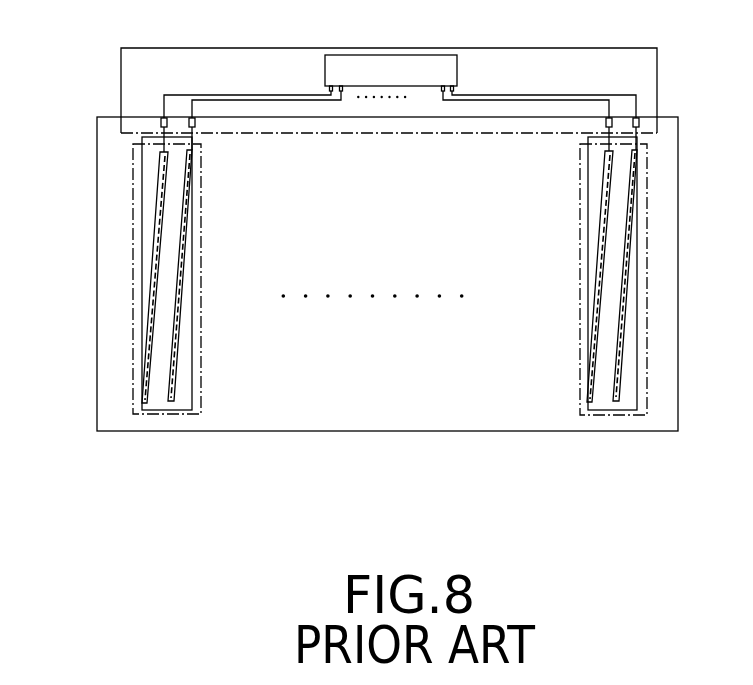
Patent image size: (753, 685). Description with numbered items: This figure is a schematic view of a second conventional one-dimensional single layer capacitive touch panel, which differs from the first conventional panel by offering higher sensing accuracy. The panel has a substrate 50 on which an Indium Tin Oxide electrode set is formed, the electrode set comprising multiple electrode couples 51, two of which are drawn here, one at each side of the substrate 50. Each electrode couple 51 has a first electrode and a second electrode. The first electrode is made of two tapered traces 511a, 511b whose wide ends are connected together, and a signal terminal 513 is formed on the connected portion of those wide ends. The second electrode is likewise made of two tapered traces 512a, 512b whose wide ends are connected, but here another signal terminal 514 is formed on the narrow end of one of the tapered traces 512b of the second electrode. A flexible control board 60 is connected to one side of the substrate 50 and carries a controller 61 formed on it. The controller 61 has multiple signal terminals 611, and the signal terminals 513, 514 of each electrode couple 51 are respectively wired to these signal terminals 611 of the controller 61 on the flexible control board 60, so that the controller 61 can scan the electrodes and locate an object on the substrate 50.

The substrate 50 is at (670, 155).
The electrode couple 51 is at (133, 158).
The tapered trace 511a is at (152, 171).
The tapered trace 511b is at (180, 195).
The tapered trace 512a is at (160, 358).
The tapered trace 512b is at (184, 354).
The signal terminal 513 is at (190, 117).
The signal terminal 514 is at (163, 117).
The flexible control board 60 is at (648, 72).
The controller 61 is at (424, 60).
The signal terminal 611 is at (330, 88).